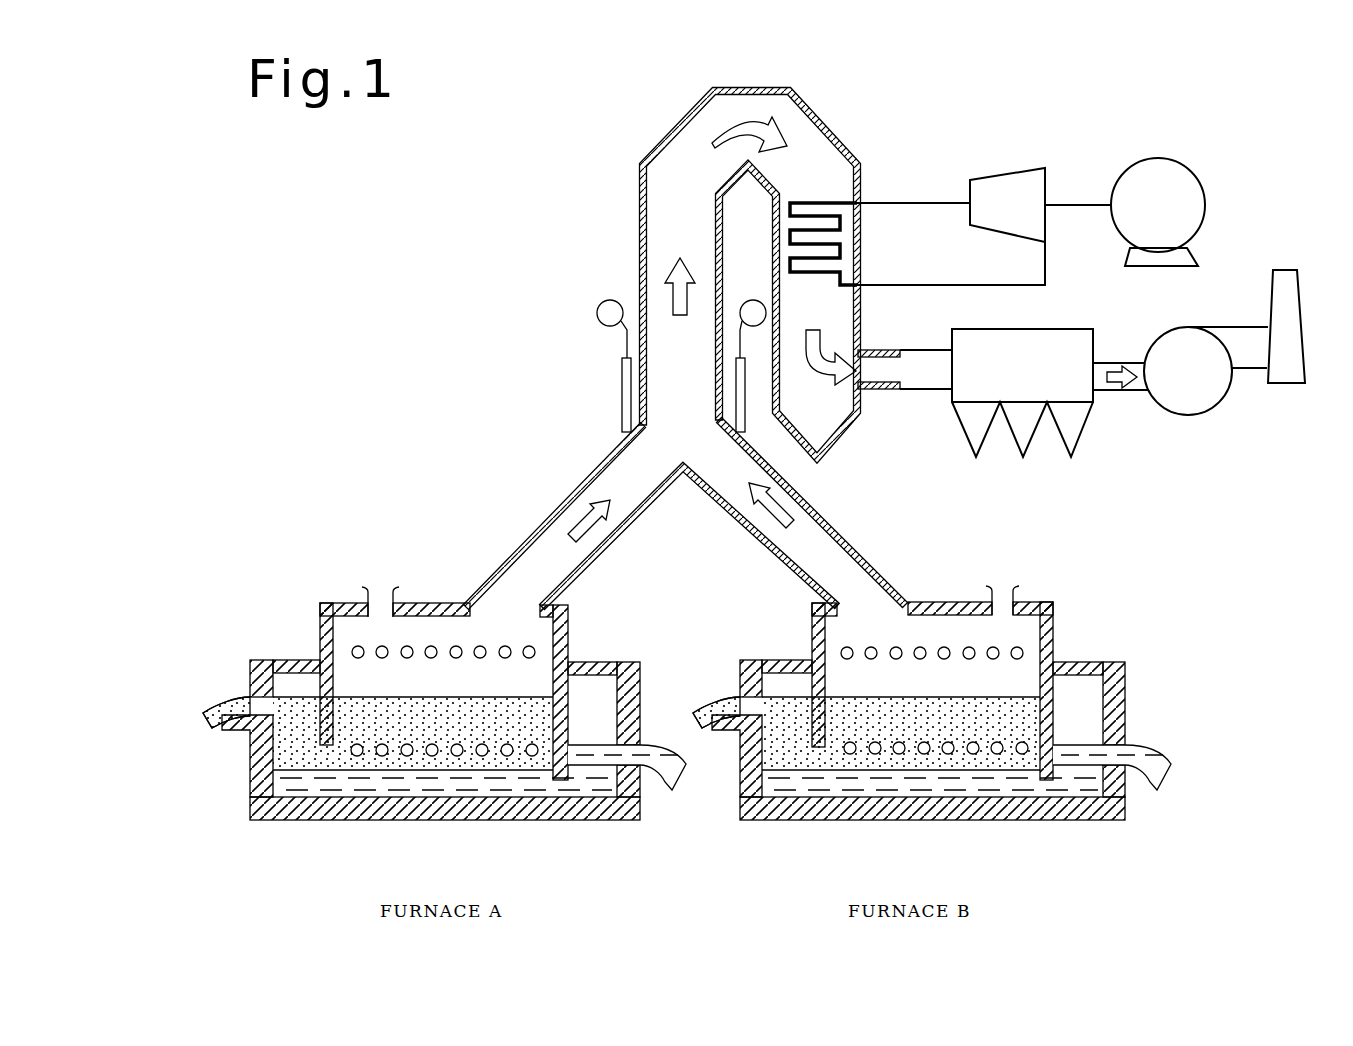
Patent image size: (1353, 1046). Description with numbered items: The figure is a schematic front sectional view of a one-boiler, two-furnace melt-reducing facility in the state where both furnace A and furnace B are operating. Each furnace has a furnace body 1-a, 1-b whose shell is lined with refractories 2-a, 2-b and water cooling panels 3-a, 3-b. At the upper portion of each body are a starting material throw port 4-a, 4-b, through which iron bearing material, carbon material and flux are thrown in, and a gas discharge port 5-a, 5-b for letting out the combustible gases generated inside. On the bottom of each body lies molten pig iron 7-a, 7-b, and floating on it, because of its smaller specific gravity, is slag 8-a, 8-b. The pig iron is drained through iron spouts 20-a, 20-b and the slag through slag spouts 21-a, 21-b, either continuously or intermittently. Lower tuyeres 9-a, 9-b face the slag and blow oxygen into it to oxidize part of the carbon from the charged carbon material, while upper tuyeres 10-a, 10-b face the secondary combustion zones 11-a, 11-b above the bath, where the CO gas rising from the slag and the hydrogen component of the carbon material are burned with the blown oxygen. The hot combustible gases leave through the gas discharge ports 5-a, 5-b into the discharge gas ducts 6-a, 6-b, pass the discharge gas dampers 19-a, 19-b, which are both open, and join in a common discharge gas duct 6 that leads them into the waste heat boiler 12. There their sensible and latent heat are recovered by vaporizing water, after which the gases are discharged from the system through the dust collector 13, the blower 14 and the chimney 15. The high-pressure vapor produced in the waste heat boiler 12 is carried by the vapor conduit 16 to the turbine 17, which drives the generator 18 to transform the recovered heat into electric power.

The furnace body 1-a is at (500, 824).
The furnace body 1-b is at (1024, 824).
The refractories 2-a is at (298, 815).
The refractories 2-b is at (803, 818).
The water cooling panel 3-a is at (570, 633).
The water cooling panel 3-b is at (1055, 620).
The starting material throw port 4-a is at (380, 590).
The starting material throw port 4-b is at (1003, 592).
The gas discharge port 5-a is at (490, 607).
The gas discharge port 5-b is at (872, 598).
The exhaust gas duct 6 is at (670, 208).
The discharge gas duct 6-a is at (613, 478).
The discharge gas duct 6-b is at (858, 542).
The molten pig iron 7-a is at (418, 785).
The molten pig iron 7-b is at (882, 785).
The slag 8-a is at (292, 743).
The slag 8-b is at (770, 747).
The lower tuyere 9-a is at (465, 752).
The lower tuyere 9-b is at (950, 753).
The upper tuyere 10-a is at (432, 658).
The upper tuyere 10-b is at (920, 658).
The secondary combustion zone 11-a is at (365, 630).
The secondary combustion zone 11-b is at (1003, 633).
The waste heat boiler 12 is at (826, 172).
The dust collector 13 is at (975, 393).
The blower 14 is at (1197, 410).
The chimney 15 is at (1285, 307).
The vapor conduit 16 is at (928, 200).
The turbine 17 is at (1020, 190).
The generator 18 is at (1188, 203).
The discharge gas damper 19-a is at (618, 400).
The discharge gas damper 19-b is at (748, 425).
The iron spout 20-a is at (650, 737).
The iron spout 20-b is at (1133, 742).
The slag spout 21-a is at (245, 692).
The slag spout 21-b is at (735, 690).